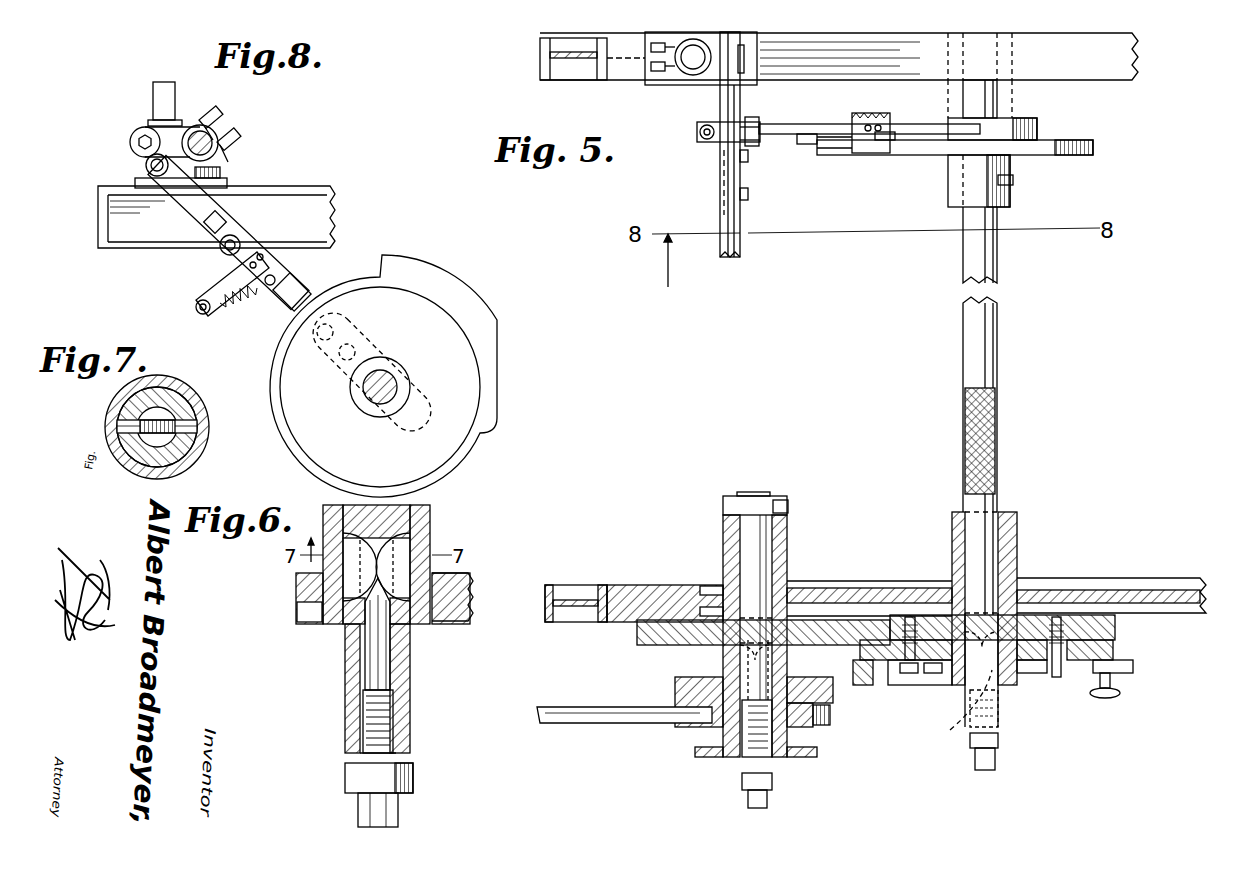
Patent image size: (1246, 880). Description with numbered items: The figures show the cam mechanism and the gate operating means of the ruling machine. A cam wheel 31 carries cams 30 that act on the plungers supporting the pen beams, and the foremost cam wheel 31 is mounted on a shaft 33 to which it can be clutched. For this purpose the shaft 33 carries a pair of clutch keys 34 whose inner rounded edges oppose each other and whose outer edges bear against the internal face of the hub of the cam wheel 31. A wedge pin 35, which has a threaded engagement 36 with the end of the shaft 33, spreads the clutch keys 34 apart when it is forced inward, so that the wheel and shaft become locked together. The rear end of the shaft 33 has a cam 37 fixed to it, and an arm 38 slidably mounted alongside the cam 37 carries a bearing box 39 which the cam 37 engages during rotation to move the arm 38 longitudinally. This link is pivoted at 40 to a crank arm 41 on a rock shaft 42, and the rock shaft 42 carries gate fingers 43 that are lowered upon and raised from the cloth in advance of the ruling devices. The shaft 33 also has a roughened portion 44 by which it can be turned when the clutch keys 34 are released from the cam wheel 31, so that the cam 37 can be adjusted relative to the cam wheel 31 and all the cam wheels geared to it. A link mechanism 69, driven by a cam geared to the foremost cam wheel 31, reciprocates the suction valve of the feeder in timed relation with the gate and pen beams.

In FIG. 5, the cam 30 is at (1133, 667).
In FIG. 5, the cam wheel 31 is at (640, 640).
In FIG. 6, the cam wheel 31 is at (455, 626).
In FIG. 5, the shaft 33 is at (990, 253).
In FIG. 8, the shaft 33 is at (390, 380).
In FIG. 5, the clutch keys 34 is at (780, 645).
In FIG. 7, the clutch keys 34 is at (118, 426).
In FIG. 6, the clutch keys 34 is at (405, 545).
In FIG. 5, the wedge pin 35 is at (950, 730).
In FIG. 6, the wedge pin 35 is at (383, 655).
In FIG. 5, the threaded engagement 36 is at (972, 728).
In FIG. 6, the threaded engagement 36 is at (410, 712).
In FIG. 5, the cam 37 is at (1095, 148).
In FIG. 8, the cam 37 is at (478, 310).
In FIG. 5, the arm 38 is at (790, 136).
In FIG. 8, the arm 38 is at (300, 290).
In FIG. 5, the bearing box 39 is at (874, 150).
In FIG. 8, the bearing box 39 is at (280, 305).
In FIG. 5, the pivot 40 is at (750, 125).
In FIG. 8, the pivot 40 is at (145, 160).
In FIG. 5, the crank arm 41 is at (725, 132).
In FIG. 8, the crank arm 41 is at (145, 125).
In FIG. 5, the rock shaft 42 is at (722, 100).
In FIG. 8, the rock shaft 42 is at (195, 128).
In FIG. 5, the gate fingers 43 is at (750, 196).
In FIG. 8, the gate fingers 43 is at (228, 155).
In FIG. 5, the roughened portion 44 is at (997, 427).
In FIG. 5, the link mechanism 69 is at (612, 722).